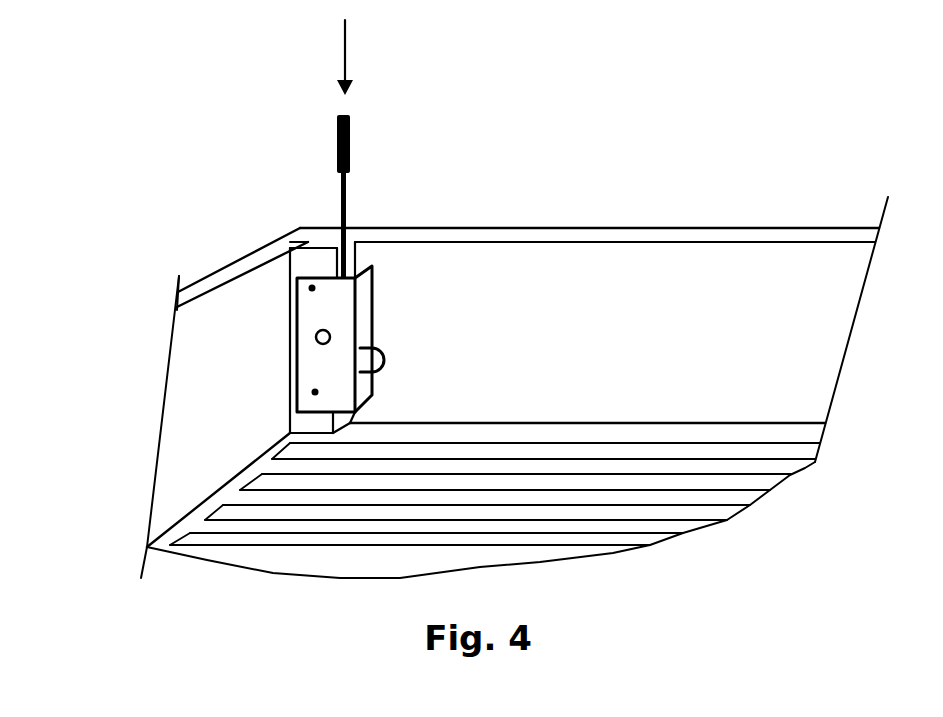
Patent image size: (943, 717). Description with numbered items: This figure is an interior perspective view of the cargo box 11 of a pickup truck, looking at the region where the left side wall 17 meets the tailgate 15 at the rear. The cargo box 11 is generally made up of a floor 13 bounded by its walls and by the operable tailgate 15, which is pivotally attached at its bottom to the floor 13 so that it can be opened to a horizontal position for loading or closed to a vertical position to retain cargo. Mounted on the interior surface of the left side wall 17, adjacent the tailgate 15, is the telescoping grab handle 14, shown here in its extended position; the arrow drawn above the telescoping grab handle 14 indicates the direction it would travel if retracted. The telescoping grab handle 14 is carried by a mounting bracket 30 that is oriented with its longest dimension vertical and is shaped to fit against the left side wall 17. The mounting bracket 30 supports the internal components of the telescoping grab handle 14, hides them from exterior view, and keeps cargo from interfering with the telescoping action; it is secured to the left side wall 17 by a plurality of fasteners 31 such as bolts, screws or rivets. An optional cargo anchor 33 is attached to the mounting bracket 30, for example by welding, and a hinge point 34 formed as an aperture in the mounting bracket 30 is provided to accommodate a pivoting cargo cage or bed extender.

The cargo box 11 is at (646, 128).
The floor 13 is at (540, 563).
The telescoping grab handle 14 is at (328, 203).
The tailgate 15 is at (250, 252).
The left side wall 17 is at (695, 227).
The mounting bracket 30 is at (372, 315).
The fasteners 31 is at (313, 391).
The cargo anchor 33 is at (388, 352).
The hinge point 34 is at (316, 336).